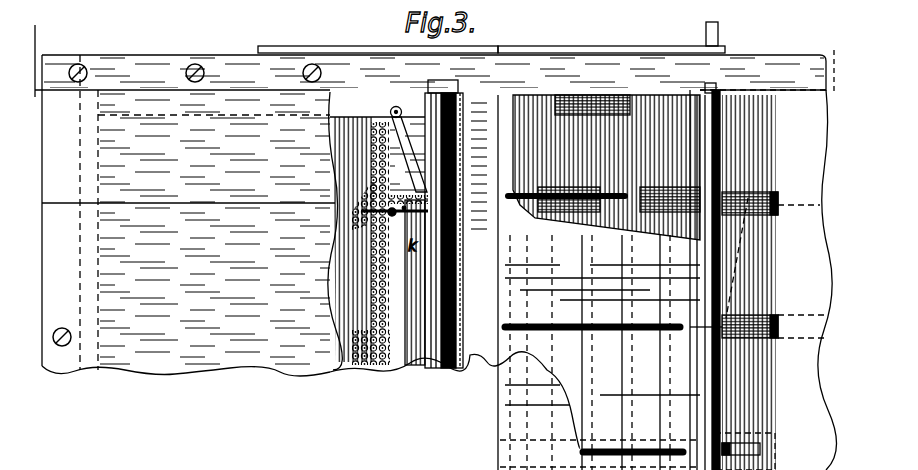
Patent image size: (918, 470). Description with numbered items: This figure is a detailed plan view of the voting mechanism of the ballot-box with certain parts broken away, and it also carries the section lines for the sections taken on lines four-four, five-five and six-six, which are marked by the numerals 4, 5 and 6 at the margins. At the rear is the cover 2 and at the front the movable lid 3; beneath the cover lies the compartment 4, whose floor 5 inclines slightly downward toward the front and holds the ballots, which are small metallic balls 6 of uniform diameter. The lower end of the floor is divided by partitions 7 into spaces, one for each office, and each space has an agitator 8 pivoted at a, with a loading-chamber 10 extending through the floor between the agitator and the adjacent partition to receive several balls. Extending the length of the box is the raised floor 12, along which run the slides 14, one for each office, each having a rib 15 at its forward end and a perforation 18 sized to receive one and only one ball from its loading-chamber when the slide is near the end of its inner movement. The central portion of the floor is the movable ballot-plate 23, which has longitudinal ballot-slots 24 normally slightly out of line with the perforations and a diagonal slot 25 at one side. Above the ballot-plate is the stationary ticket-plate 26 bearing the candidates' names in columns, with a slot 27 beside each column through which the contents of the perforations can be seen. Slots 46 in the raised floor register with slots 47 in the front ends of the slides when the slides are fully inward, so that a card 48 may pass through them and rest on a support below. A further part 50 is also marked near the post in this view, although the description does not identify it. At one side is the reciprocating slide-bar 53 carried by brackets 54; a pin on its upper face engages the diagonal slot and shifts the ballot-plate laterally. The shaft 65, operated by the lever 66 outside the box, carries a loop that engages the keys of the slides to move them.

The cover 2 is at (192, 215).
The movable lid 3 is at (466, 112).
The compartment 4 is at (437, 201).
The floor 5 is at (350, 392).
The metallic balls 6 is at (368, 185).
The partitions 7 is at (372, 212).
The agitator 8 is at (370, 150).
The loading-chamber 10 is at (372, 327).
The raised floor 12 is at (675, 280).
The slides 14 is at (741, 258).
The ribs 15 is at (770, 196).
The perforation 18 is at (596, 323).
The ballot-plate 23 is at (688, 125).
The ballot-slots 24 is at (606, 192).
The diagonal slot 25 is at (584, 115).
The ticket-plate 26 is at (490, 365).
The slot 27 is at (512, 203).
The slots 46 is at (746, 446).
The slots 47 is at (752, 322).
The card 48 is at (742, 195).
The pin 50 is at (462, 196).
The slide-bar 53 is at (632, 110).
The brackets 54 is at (607, 115).
The shaft 65 is at (262, 49).
The lever 66 is at (611, 37).
The pivot a is at (391, 110).